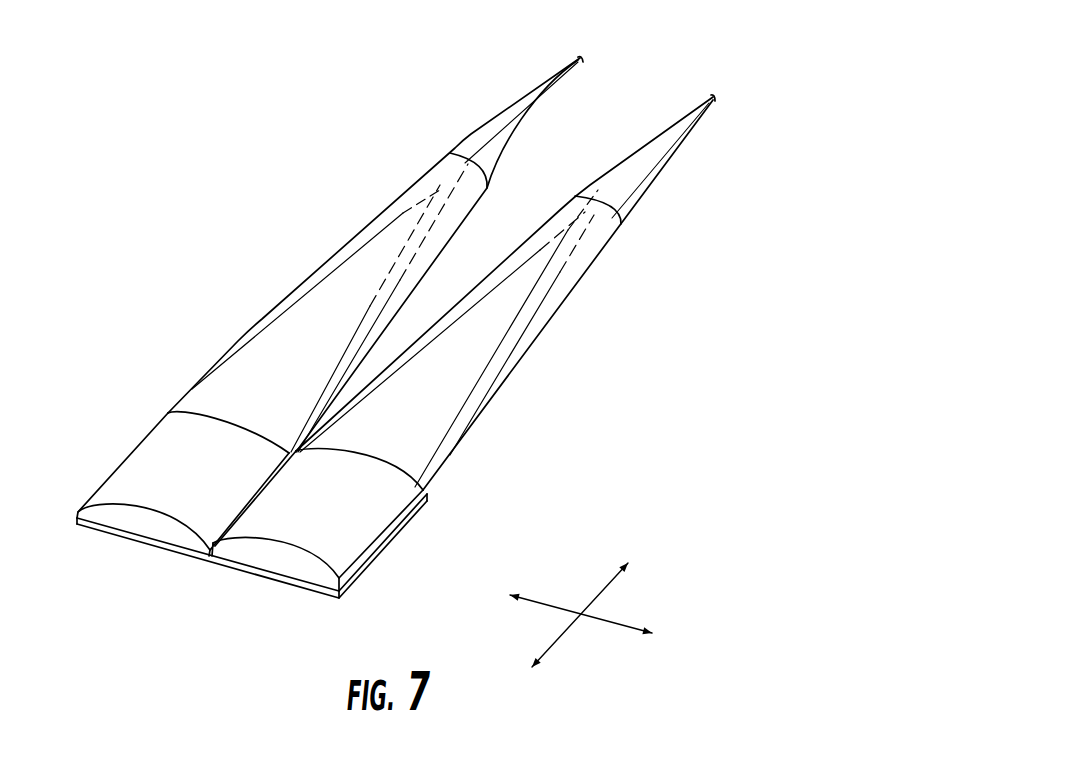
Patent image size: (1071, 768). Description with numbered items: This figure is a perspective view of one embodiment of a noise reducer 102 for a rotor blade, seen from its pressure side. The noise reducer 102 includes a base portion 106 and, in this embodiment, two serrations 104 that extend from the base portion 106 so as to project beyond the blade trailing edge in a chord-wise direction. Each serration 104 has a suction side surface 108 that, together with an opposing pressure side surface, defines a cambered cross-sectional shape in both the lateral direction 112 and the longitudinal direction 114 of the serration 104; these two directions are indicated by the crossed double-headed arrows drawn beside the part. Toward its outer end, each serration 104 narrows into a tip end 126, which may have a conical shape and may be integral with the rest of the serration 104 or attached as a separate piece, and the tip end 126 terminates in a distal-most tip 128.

The noise reducer 102 is at (182, 218).
The serration 104 is at (245, 320).
The base portion 106 is at (410, 531).
The suction side surface 108 is at (312, 303).
The lateral direction 112 is at (598, 620).
The longitudinal direction 114 is at (607, 585).
The tip end 126 is at (523, 153).
The distal-most tip 128 is at (709, 92).